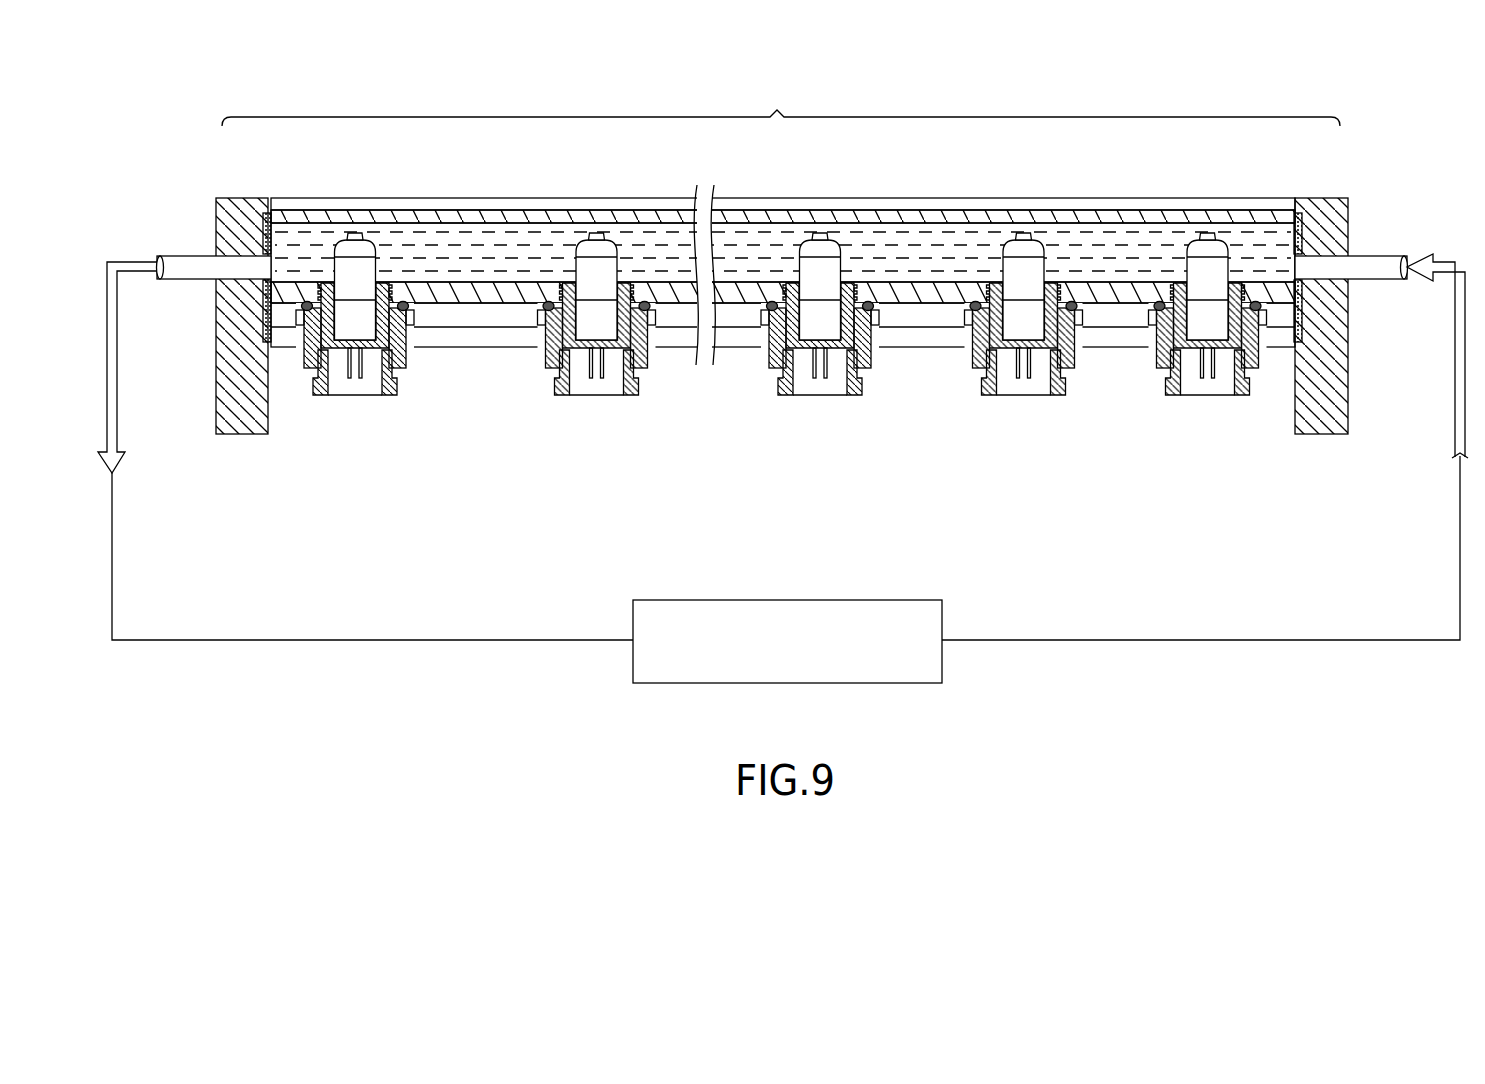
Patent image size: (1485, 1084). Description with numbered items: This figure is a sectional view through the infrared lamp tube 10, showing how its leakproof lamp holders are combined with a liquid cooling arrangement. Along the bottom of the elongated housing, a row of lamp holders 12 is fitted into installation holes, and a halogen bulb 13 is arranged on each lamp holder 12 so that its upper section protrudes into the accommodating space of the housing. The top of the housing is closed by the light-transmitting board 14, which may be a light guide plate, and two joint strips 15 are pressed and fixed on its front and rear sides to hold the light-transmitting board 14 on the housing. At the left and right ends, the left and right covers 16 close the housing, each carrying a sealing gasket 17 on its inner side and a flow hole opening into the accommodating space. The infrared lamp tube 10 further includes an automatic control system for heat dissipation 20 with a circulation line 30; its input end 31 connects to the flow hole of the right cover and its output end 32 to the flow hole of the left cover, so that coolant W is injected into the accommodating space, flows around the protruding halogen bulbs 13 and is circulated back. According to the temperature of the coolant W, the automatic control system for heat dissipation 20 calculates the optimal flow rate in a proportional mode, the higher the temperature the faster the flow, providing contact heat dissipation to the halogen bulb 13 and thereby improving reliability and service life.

The infrared lamp tube 10 is at (781, 104).
The lamp holder 12 is at (1153, 368).
The halogen bulb 13 is at (1203, 265).
The light-transmitting board 14 is at (846, 218).
The joint strip 15 is at (762, 208).
The left and right covers 16 is at (243, 207).
The sealing gasket 17 is at (265, 316).
The automatic control system for heat dissipation 20 is at (848, 608).
The circulation line 30 is at (118, 425).
The input end 31 is at (1381, 252).
The output end 32 is at (180, 252).
The coolant W is at (1112, 243).